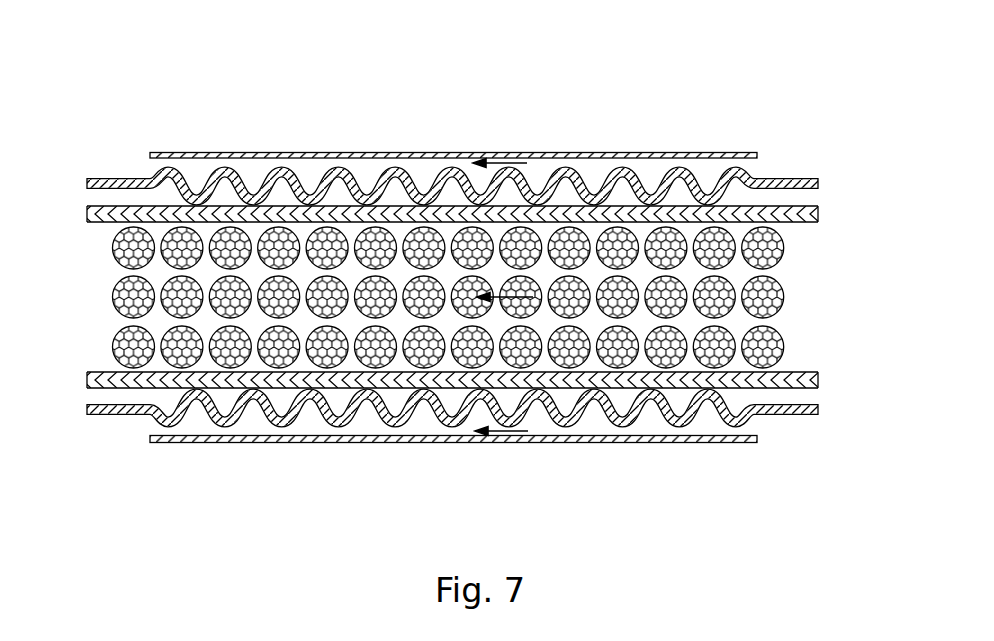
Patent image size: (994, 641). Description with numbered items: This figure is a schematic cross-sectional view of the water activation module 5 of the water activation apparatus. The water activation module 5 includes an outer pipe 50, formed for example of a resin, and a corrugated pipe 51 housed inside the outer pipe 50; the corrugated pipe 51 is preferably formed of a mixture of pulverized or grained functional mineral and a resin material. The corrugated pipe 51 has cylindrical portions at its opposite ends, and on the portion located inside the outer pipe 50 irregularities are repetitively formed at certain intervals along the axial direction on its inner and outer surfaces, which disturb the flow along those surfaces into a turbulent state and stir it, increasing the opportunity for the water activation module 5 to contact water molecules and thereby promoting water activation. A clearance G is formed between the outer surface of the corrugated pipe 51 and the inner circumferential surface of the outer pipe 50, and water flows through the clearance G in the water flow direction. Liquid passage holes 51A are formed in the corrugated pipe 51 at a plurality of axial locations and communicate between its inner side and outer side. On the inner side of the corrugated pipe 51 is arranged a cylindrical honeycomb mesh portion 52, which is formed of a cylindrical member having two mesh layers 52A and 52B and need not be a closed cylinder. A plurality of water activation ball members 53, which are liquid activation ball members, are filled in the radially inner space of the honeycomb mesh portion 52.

The water activation module 5 is at (775, 82).
The outer pipe 50 is at (583, 152).
The corrugated pipe 51 is at (487, 297).
The liquid passage holes 51A is at (284, 168).
The honeycomb mesh portion 52 is at (498, 298).
The mesh layer 52A is at (790, 210).
The mesh layer 52B is at (790, 216).
The water activation ball members 53 is at (784, 260).
The clearance G is at (425, 167).